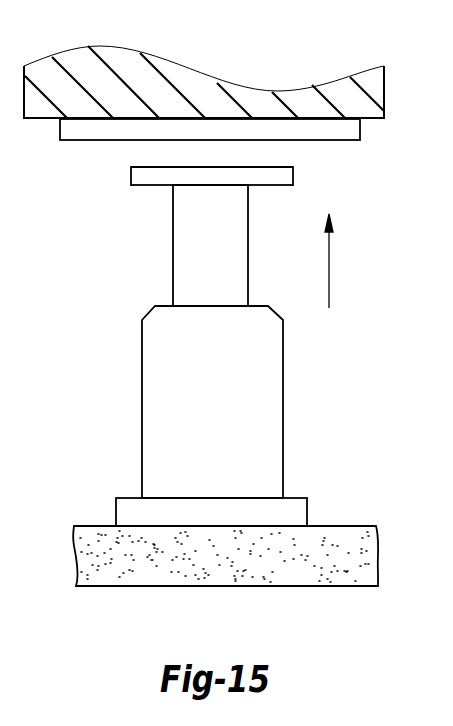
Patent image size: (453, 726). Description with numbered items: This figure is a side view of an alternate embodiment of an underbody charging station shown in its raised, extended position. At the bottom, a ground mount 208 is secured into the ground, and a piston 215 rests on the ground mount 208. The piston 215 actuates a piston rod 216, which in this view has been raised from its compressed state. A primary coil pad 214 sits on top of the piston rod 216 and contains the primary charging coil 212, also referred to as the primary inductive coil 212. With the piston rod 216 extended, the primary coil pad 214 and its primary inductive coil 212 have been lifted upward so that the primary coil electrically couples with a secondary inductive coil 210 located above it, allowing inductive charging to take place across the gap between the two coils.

The ground mount 208 is at (300, 513).
The secondary inductive coil 210 is at (328, 157).
The primary inductive coil 212 is at (151, 159).
The primary coil pad 214 is at (158, 178).
The piston 215 is at (228, 413).
The piston rod 216 is at (228, 241).